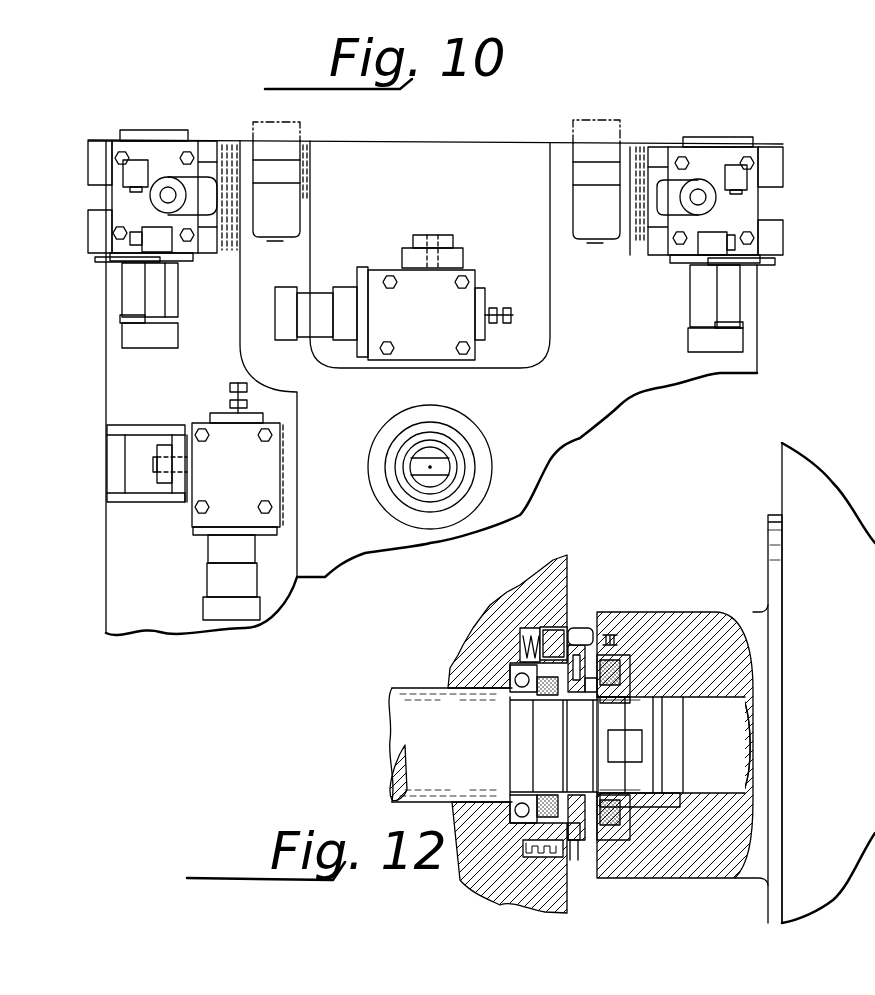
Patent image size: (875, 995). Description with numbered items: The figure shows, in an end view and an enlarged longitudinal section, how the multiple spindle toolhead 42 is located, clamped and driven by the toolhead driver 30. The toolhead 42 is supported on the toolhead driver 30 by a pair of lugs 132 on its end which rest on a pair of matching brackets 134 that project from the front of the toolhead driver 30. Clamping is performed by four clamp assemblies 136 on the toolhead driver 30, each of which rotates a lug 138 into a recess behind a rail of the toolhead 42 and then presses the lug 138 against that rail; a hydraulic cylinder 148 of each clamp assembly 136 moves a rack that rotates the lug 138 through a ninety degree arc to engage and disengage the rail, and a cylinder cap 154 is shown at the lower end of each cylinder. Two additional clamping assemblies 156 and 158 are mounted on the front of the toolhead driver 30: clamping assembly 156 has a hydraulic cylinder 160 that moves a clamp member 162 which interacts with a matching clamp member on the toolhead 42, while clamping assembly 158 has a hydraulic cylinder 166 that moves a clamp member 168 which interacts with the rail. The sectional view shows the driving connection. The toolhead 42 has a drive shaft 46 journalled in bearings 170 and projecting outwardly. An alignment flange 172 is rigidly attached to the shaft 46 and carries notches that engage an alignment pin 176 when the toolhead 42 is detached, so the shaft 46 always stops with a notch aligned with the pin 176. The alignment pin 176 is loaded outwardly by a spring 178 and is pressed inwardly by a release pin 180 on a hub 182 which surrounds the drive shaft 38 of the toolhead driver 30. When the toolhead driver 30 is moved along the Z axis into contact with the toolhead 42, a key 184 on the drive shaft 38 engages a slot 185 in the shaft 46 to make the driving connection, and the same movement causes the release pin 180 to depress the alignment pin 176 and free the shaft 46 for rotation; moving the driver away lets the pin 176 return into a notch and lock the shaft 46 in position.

In FIG. 10, the toolhead driver 30 is at (345, 480).
In FIG. 12, the toolhead driver 30 is at (845, 688).
In FIG. 12, the drive shaft 38 is at (727, 781).
In FIG. 12, the multiple spindle toolhead 42 is at (462, 645).
In FIG. 12, the drive shaft 46 is at (413, 723).
In FIG. 10, the lugs 132 is at (288, 130).
In FIG. 10, the brackets 134 is at (287, 202).
In FIG. 10, the clamp assemblies 136 is at (172, 110).
In FIG. 10, the lugs 138 is at (202, 182).
In FIG. 10, the hydraulic cylinder 148 is at (134, 290).
In FIG. 10, the cylinder cap 154 is at (138, 332).
In FIG. 10, the clamping assembly 156 is at (465, 302).
In FIG. 10, the clamping assembly 158 is at (220, 440).
In FIG. 10, the hydraulic cylinder 160 is at (307, 327).
In FIG. 10, the clamp member 162 is at (452, 242).
In FIG. 10, the hydraulic cylinder 166 is at (220, 582).
In FIG. 10, the clamp member 168 is at (177, 487).
In FIG. 12, the bearings 170 is at (527, 793).
In FIG. 12, the alignment flange 172 is at (577, 840).
In FIG. 12, the alignment pin 176 is at (560, 625).
In FIG. 12, the spring 178 is at (522, 650).
In FIG. 10, the release pin 180 is at (430, 416).
In FIG. 12, the release pin 180 is at (583, 633).
In FIG. 10, the hub 182 is at (387, 508).
In FIG. 12, the hub 182 is at (678, 625).
In FIG. 12, the key 184 is at (633, 733).
In FIG. 10, the slot 185 is at (443, 462).
In FIG. 12, the slot 185 is at (633, 754).